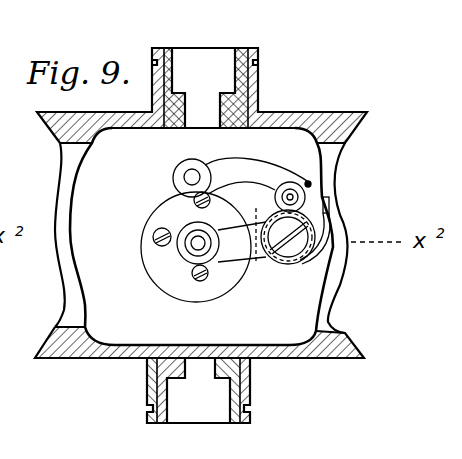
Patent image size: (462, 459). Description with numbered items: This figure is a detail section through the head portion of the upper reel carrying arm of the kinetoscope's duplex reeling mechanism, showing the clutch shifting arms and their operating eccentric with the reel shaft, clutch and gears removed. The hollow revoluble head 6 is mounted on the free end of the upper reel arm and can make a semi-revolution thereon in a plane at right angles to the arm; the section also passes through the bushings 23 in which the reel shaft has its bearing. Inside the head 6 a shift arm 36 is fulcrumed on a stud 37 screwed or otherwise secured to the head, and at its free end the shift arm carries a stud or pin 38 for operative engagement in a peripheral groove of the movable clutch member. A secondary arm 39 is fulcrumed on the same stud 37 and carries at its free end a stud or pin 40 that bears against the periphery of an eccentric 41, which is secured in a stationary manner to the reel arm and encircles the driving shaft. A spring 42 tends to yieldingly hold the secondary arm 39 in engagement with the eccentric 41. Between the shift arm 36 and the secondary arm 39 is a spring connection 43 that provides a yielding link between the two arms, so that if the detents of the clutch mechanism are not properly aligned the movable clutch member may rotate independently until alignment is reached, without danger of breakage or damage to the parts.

The hollow revoluble head 6 is at (313, 115).
The bushing 23 is at (259, 63).
The shift arm 36 is at (242, 272).
The stud 37 is at (293, 246).
The stud or pin 38 is at (198, 243).
The secondary arm 39 is at (274, 166).
The stud or pin 40 is at (192, 178).
The eccentric 41 is at (175, 288).
The spring 42 is at (329, 208).
The spring connection 43 is at (277, 204).